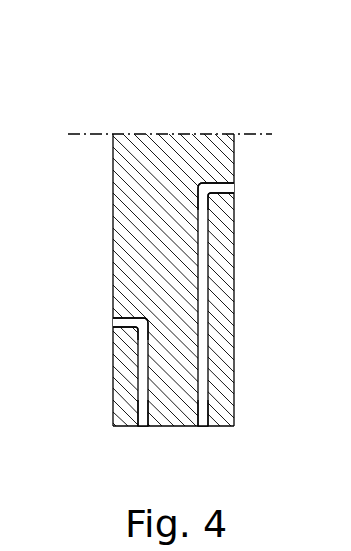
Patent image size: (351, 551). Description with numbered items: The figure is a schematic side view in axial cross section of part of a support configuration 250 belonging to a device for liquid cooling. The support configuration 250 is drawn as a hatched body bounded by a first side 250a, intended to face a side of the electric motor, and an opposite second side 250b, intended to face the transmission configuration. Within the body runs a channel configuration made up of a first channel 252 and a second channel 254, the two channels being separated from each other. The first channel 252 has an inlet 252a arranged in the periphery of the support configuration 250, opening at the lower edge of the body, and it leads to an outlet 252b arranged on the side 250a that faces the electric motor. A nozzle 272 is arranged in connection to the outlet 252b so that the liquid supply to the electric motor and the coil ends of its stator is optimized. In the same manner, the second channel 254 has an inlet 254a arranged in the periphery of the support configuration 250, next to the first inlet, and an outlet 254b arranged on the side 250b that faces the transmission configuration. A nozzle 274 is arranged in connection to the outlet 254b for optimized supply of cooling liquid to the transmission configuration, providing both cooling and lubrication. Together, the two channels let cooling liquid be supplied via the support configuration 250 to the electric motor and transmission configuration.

The support configuration 250 is at (145, 89).
The side of the support configuration facing the electric motor 250a is at (113, 172).
The side of the support configuration facing the transmission configuration 250b is at (234, 267).
The first channel 252 is at (138, 383).
The inlet of the first channel 252a is at (141, 427).
The outlet of the first channel 252b is at (106, 327).
The second channel 254 is at (209, 331).
The inlet of the second channel 254a is at (204, 427).
The outlet of the second channel 254b is at (236, 192).
The nozzle 272 is at (106, 322).
The nozzle 274 is at (236, 187).